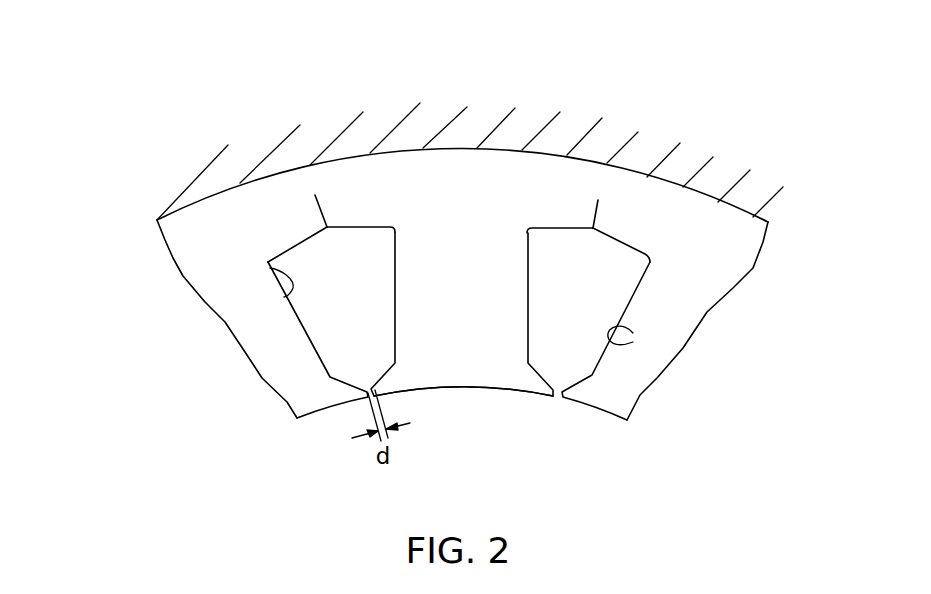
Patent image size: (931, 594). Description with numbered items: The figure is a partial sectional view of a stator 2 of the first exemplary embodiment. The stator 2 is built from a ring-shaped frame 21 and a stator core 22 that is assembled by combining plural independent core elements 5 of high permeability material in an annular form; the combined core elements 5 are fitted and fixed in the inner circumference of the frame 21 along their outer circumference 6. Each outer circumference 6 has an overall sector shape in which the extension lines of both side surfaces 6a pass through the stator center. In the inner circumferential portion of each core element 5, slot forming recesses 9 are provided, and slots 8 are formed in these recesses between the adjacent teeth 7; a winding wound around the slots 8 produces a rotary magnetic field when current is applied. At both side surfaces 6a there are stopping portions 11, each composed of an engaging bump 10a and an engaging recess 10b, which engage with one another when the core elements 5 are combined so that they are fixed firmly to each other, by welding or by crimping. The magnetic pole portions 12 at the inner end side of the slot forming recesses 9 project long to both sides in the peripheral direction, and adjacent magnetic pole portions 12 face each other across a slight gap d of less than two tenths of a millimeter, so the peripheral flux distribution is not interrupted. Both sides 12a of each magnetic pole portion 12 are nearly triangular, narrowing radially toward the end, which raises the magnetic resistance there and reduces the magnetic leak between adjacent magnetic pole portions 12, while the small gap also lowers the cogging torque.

The stator 2 is at (182, 319).
The core element 5 is at (485, 235).
The outer circumference 6 is at (330, 107).
The side surface 6a is at (457, 116).
The tooth 7 is at (462, 215).
The slot 8 is at (337, 309).
The slot forming recess 9 is at (430, 321).
The engaging bump 10a is at (560, 131).
The engaging recess 10b is at (321, 111).
The stopping portion 11 is at (381, 122).
The magnetic pole portion 12 is at (463, 421).
The side of magnetic pole portion 12a is at (459, 382).
The ring-shaped frame 21 is at (812, 233).
The stator core 22 is at (776, 329).